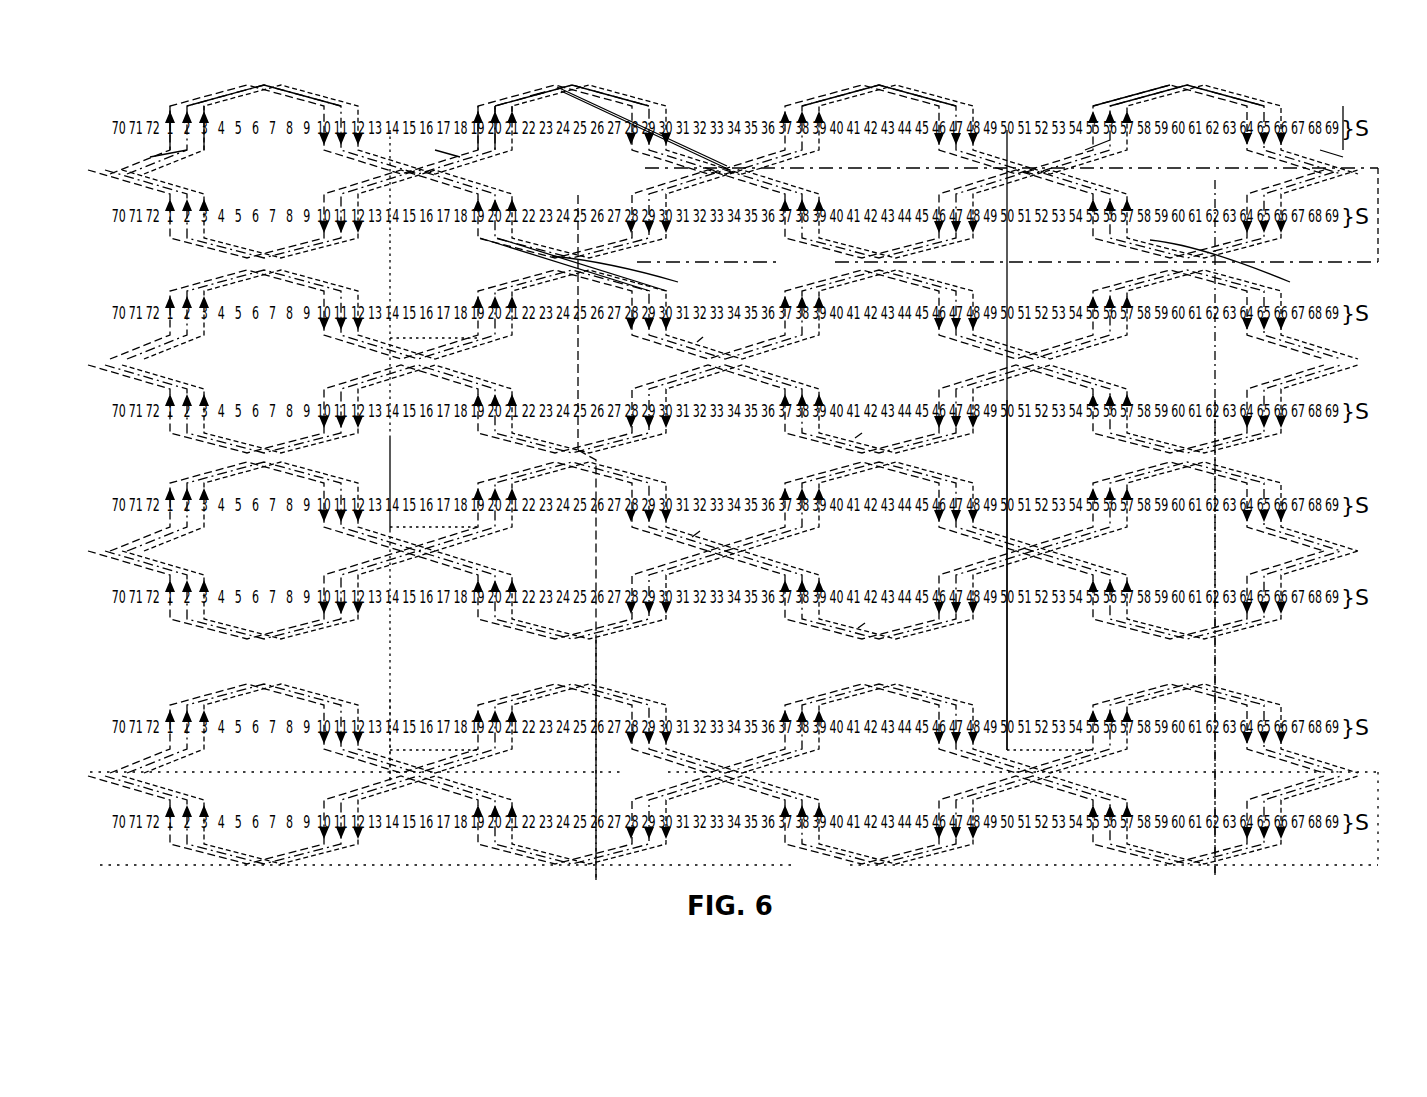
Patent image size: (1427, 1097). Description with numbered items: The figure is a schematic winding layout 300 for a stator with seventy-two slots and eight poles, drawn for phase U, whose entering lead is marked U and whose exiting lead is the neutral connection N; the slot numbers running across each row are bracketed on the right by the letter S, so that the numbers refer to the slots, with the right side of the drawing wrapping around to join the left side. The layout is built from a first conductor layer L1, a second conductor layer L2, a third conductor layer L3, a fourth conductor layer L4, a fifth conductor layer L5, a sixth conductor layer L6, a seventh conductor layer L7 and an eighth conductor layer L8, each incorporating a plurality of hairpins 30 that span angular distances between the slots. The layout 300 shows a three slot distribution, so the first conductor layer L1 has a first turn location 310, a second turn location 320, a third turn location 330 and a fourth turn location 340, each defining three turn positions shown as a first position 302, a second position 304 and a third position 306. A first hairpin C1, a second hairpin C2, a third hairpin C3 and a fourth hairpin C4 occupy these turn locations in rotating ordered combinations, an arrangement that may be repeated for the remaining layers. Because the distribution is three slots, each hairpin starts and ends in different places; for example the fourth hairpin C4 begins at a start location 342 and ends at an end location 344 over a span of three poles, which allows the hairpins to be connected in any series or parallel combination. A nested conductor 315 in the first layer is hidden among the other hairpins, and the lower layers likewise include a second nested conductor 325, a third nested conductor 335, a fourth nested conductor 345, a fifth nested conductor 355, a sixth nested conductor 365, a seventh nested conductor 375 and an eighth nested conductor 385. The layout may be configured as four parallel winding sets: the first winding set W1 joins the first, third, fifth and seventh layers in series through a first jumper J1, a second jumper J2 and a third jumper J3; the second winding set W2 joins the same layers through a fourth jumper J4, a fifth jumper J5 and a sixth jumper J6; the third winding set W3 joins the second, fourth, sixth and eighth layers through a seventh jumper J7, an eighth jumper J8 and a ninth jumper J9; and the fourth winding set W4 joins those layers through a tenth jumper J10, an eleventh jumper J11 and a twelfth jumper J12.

The winding layout 300 is at (168, 56).
The first turn location 310 is at (274, 76).
The second turn location 320 is at (578, 72).
The third turn location 330 is at (881, 75).
The fourth turn location 340 is at (1188, 73).
The hairpins 30 is at (1120, 90).
The start location 342 is at (460, 152).
The end location 344 is at (1343, 157).
The first position 302 is at (490, 108).
The second position 304 is at (520, 103).
The third position 306 is at (545, 95).
The nested conductor 315 is at (692, 150).
The second nested conductor 325 is at (1007, 261).
The third nested conductor 335 is at (697, 342).
The fourth nested conductor 345 is at (855, 438).
The fifth nested conductor 355 is at (692, 537).
The sixth nested conductor 365 is at (858, 628).
The seventh nested conductor 375 is at (734, 776).
The eighth nested conductor 385 is at (870, 856).
The first conductor layer L1 is at (128, 148).
The second conductor layer L2 is at (106, 216).
The third conductor layer L3 is at (128, 333).
The fourth conductor layer L4 is at (106, 411).
The fifth conductor layer L5 is at (128, 525).
The sixth conductor layer L6 is at (106, 597).
The seventh conductor layer L7 is at (128, 747).
The eighth conductor layer L8 is at (106, 822).
The first winding set W1 is at (476, 125).
The second winding set W2 is at (565, 88).
The third winding set W3 is at (634, 280).
The fourth winding set W4 is at (478, 237).
The first hairpin C1 is at (538, 175).
The second hairpin C2 is at (155, 157).
The third hairpin C3 is at (206, 150).
The fourth hairpin C4 is at (483, 140).
The first jumper J1 is at (1009, 290).
The second jumper J2 is at (392, 463).
The third jumper J3 is at (1009, 670).
The fourth jumper J4 is at (392, 290).
The fifth jumper J5 is at (1009, 463).
The sixth jumper J6 is at (392, 670).
The seventh jumper J7 is at (1217, 360).
The eighth jumper J8 is at (596, 558).
The ninth jumper J9 is at (1217, 670).
The tenth jumper J10 is at (578, 358).
The eleventh jumper J11 is at (1217, 463).
The twelfth jumper J12 is at (600, 676).
The slot S is at (1356, 128).
The phase U is at (1380, 241).
The neutral connection N is at (1380, 834).